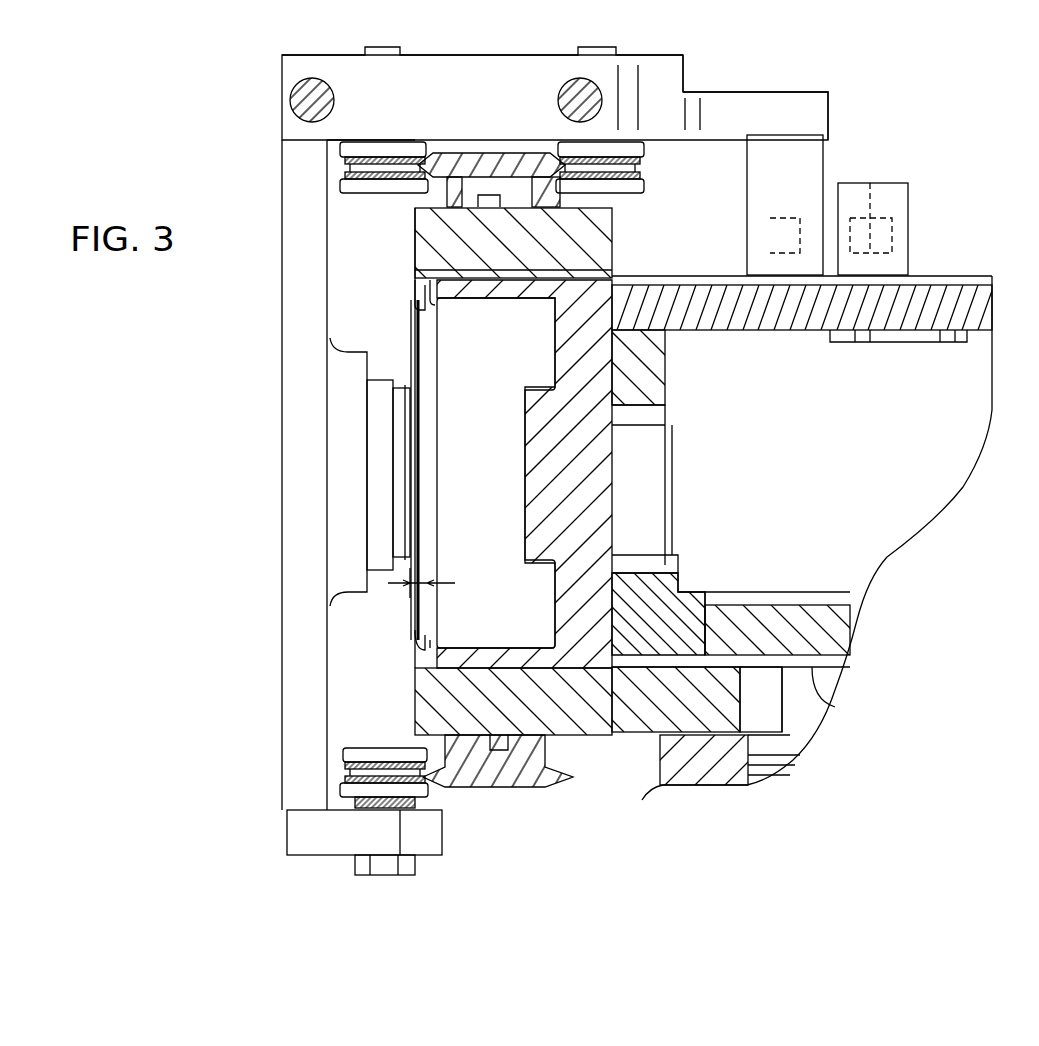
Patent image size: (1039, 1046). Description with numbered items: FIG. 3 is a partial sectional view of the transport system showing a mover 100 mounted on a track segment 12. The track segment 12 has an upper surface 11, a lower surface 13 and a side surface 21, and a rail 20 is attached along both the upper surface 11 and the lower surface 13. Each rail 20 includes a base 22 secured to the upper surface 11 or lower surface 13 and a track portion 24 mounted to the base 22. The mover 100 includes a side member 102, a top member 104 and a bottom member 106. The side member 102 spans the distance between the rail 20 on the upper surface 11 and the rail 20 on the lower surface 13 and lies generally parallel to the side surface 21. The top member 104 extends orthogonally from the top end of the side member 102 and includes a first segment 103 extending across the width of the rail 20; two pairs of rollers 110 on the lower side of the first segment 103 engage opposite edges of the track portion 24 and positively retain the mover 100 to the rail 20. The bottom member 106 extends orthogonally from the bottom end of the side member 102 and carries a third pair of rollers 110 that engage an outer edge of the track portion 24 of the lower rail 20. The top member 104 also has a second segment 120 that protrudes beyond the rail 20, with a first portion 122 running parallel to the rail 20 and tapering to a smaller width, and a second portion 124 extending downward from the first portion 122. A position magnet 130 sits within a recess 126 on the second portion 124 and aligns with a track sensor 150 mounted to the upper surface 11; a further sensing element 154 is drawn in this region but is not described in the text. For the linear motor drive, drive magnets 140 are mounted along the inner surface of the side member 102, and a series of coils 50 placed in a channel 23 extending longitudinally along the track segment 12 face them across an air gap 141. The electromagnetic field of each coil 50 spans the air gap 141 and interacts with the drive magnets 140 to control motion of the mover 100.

The mover 100 is at (282, 90).
The side member 102 is at (300, 315).
The first segment 103 is at (494, 109).
The top member 104 is at (430, 78).
The bottom member 106 is at (427, 838).
The rollers 110 is at (385, 152).
The upper surface 11 is at (658, 278).
The track segment 12 is at (557, 478).
The second segment 120 is at (794, 88).
The first portion 122 is at (725, 118).
The second portion 124 is at (797, 156).
The recess 126 is at (775, 240).
The lower surface 13 is at (835, 707).
The position magnet 130 is at (797, 253).
The drive magnets 140 is at (405, 467).
The air gap 141 is at (445, 585).
The track sensor 150 is at (908, 230).
The sensor 154 is at (875, 183).
The rail 20 is at (585, 255).
The side surface 21 is at (412, 298).
The base 22 is at (484, 255).
The channel 23 is at (555, 335).
The track portion 24 is at (484, 172).
The coils 50 is at (427, 438).